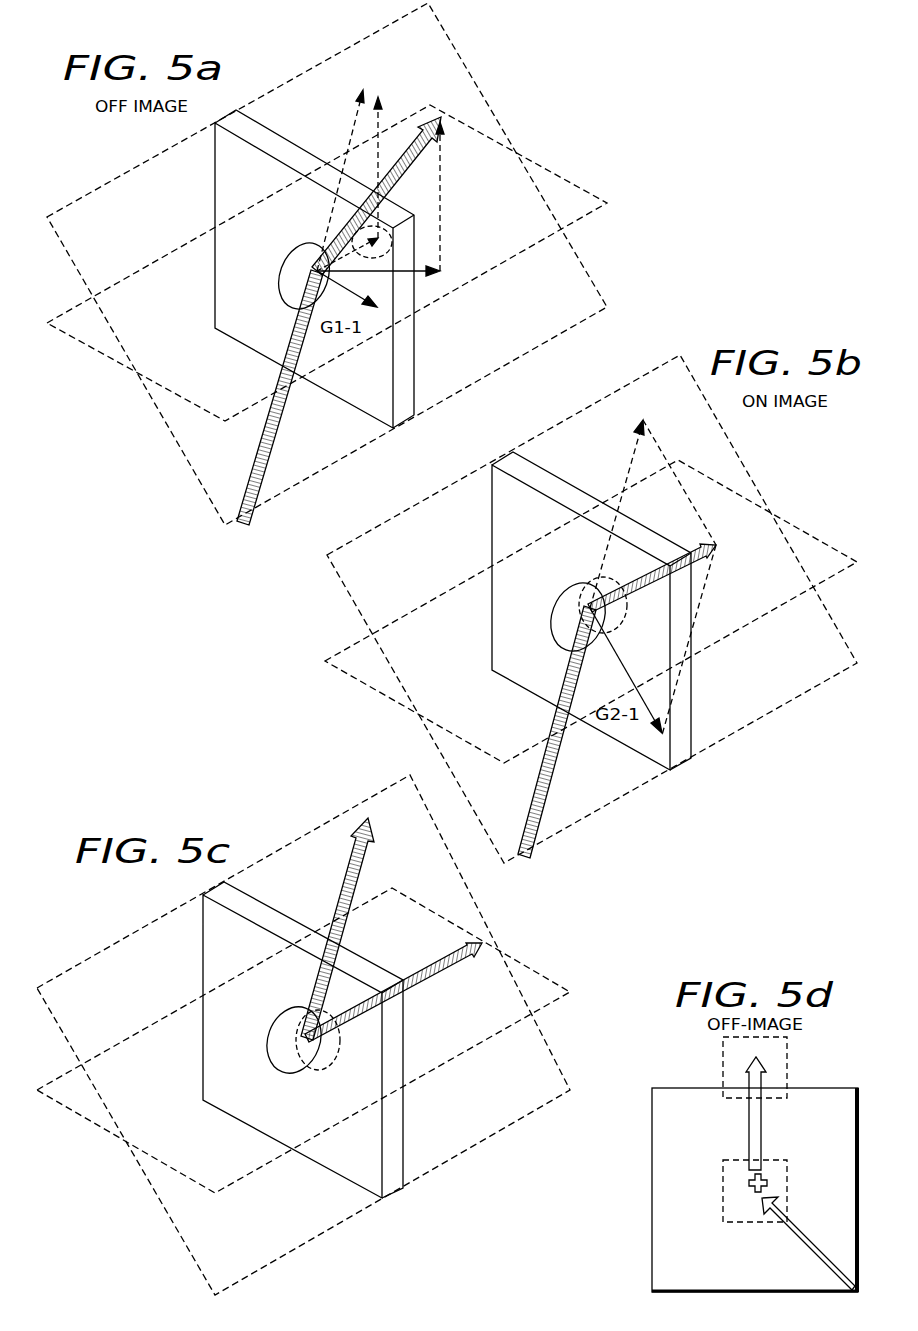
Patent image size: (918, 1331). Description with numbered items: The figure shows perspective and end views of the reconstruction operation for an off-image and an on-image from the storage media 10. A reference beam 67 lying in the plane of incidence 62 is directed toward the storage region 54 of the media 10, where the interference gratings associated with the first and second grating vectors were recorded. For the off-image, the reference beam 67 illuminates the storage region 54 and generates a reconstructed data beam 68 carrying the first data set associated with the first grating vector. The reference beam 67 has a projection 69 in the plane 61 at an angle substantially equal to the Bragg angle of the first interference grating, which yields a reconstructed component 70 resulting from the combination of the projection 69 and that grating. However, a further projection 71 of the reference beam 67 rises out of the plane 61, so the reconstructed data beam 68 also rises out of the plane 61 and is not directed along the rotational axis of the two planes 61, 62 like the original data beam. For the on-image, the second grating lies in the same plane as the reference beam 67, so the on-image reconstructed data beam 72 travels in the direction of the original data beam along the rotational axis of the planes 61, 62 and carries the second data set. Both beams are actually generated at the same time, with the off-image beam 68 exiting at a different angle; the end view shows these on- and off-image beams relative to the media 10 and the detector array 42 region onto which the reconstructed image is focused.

In FIG. 5A, the storage media 10 is at (275, 142).
In FIG. 5B, the storage media 10 is at (552, 485).
In FIG. 5C, the storage media 10 is at (263, 913).
In FIG. 5D, the storage media 10 is at (677, 1087).
In FIG. 5D, the detector array 42 is at (723, 1212).
In FIG. 5A, the storage region 54 is at (307, 240).
In FIG. 5B, the storage region 54 is at (580, 578).
In FIG. 5C, the storage region 54 is at (297, 1007).
In FIG. 5A, the plane 61 is at (66, 318).
In FIG. 5B, the plane 61 is at (345, 658).
In FIG. 5C, the plane 61 is at (57, 1087).
In FIG. 5A, the plane of incidence 62 is at (92, 200).
In FIG. 5B, the plane of incidence 62 is at (370, 545).
In FIG. 5C, the plane of incidence 62 is at (80, 970).
In FIG. 5A, the reference beam 67 is at (282, 432).
In FIG. 5B, the reference beam 67 is at (552, 773).
In FIG. 5A, the reconstructed data beam 68 is at (437, 113).
In FIG. 5C, the reconstructed data beam 68 is at (345, 867).
In FIG. 5D, the reconstructed data beam 68 is at (757, 1058).
In FIG. 5A, the projection 69 is at (378, 230).
In FIG. 5A, the reconstructed component 70 is at (430, 267).
In FIG. 5A, the projection 71 is at (388, 104).
In FIG. 5B, the on-image reconstructed data beam 72 is at (700, 540).
In FIG. 5C, the on-image reconstructed data beam 72 is at (440, 957).
In FIG. 5D, the on-image reconstructed data beam 72 is at (762, 1187).